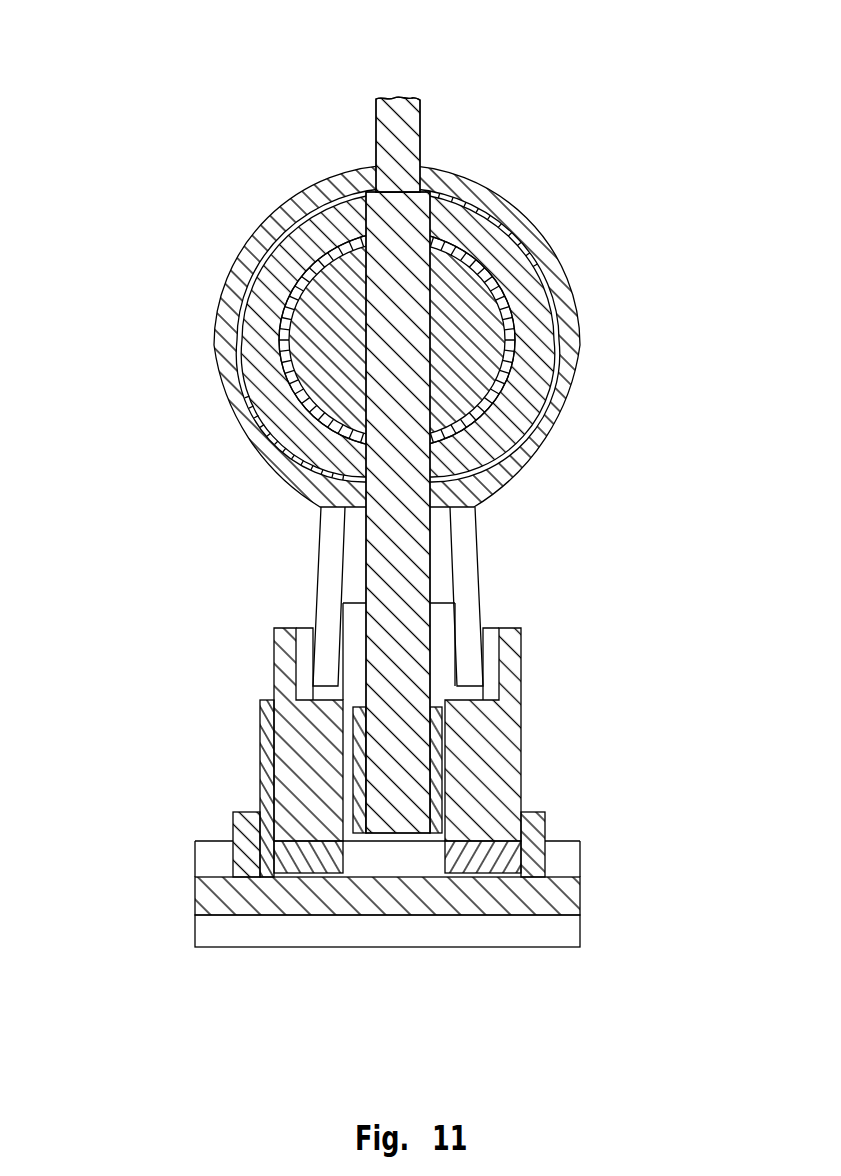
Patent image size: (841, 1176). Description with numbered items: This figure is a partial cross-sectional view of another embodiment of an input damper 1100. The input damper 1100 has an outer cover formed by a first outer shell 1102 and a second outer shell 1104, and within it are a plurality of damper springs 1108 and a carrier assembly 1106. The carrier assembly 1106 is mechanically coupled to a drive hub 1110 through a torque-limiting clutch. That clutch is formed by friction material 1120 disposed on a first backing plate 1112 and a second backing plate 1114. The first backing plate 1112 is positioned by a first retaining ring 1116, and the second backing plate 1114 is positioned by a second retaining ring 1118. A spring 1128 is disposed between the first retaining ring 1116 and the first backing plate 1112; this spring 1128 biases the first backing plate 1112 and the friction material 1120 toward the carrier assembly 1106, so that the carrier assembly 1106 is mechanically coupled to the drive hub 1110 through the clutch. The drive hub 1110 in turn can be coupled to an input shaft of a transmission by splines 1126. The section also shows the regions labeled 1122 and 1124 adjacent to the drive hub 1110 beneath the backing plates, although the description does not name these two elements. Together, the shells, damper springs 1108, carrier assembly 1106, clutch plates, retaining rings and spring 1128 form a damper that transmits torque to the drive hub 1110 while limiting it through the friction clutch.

The input damper 1100 is at (151, 120).
The first outer shell 1102 is at (318, 192).
The second outer shell 1104 is at (545, 248).
The carrier assembly 1106 is at (405, 541).
The damper springs 1108 is at (540, 347).
The drive hub 1110 is at (563, 893).
The first backing plate 1112 is at (283, 652).
The second backing plate 1114 is at (515, 669).
The first retaining ring 1116 is at (233, 822).
The second retaining ring 1118 is at (543, 827).
The friction material 1120 is at (357, 757).
The left seal 1122 is at (307, 853).
The right seal 1124 is at (478, 853).
The splines 1126 is at (207, 933).
The spring 1128 is at (265, 730).